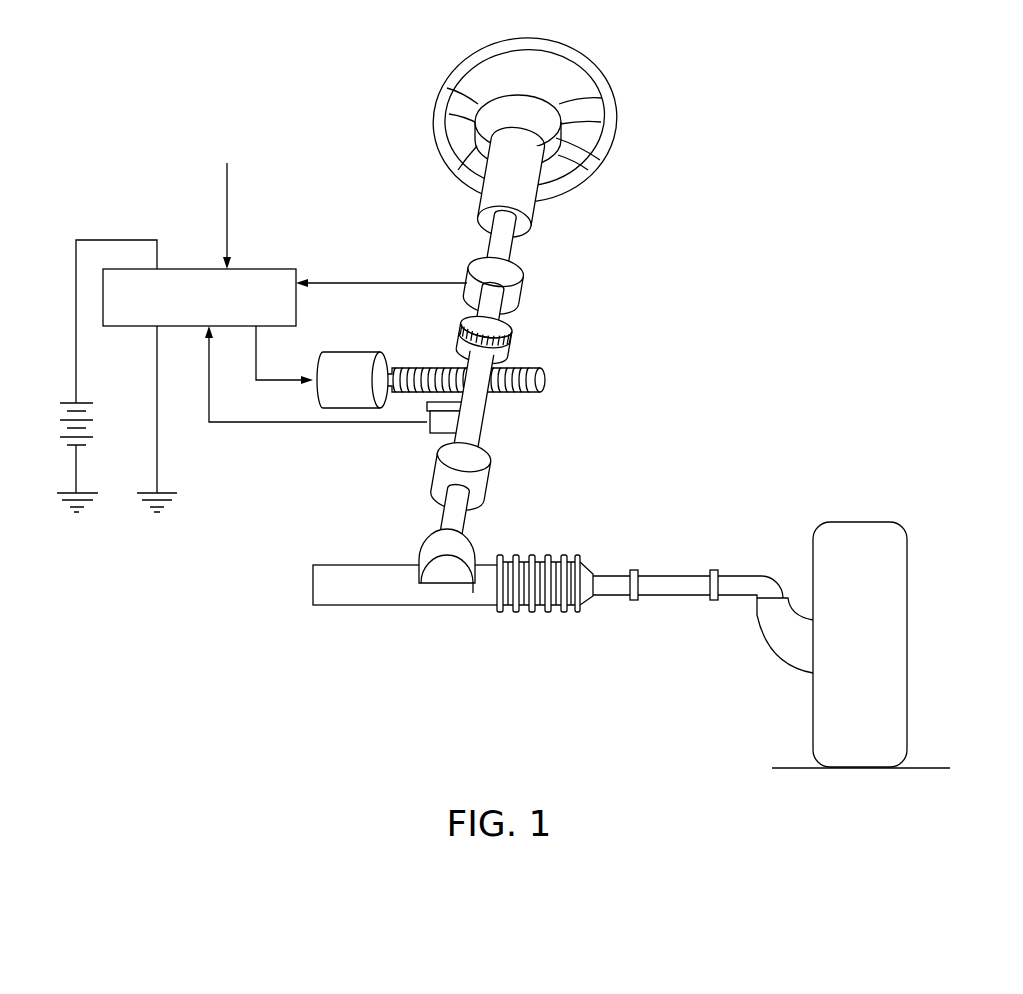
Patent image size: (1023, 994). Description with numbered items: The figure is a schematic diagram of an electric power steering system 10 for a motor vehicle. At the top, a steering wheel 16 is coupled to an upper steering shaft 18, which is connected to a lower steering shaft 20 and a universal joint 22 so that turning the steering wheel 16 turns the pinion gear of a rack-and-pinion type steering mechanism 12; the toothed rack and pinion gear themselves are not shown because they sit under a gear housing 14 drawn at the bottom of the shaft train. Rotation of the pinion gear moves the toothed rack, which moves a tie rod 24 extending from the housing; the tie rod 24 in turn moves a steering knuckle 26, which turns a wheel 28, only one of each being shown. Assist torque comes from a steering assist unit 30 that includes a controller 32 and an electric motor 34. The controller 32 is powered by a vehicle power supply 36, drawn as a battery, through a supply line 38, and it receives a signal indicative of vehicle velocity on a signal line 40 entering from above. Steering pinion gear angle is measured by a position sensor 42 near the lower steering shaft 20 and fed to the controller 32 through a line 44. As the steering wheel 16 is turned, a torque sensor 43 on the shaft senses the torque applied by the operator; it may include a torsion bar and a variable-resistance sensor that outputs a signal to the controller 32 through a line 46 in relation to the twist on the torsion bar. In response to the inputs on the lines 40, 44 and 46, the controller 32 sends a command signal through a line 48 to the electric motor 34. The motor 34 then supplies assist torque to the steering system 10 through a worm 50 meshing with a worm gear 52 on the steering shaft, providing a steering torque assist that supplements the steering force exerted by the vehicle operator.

The electric power steering system 10 is at (684, 218).
The rack-and-pinion type steering mechanism 12 is at (526, 624).
The gear housing 14 is at (465, 548).
The steering wheel 16 is at (612, 105).
The upper steering shaft 18 is at (503, 237).
The lower steering shaft 20 is at (488, 398).
The universal joint 22 is at (482, 472).
The tie rod 24 is at (683, 595).
The steering knuckle 26 is at (762, 637).
The wheel 28 is at (908, 652).
The steering assist unit 30 is at (282, 183).
The controller 32 is at (277, 268).
The electric motor 34 is at (367, 363).
The vehicle power supply 36 is at (67, 400).
The supply line 38 is at (100, 238).
The signal line 40 is at (225, 198).
The position sensor 42 is at (437, 428).
The torque sensor 43 is at (515, 280).
The line 44 is at (312, 425).
The line 46 is at (347, 282).
The line 48 is at (257, 358).
The worm 50 is at (540, 377).
The worm gear 52 is at (510, 338).